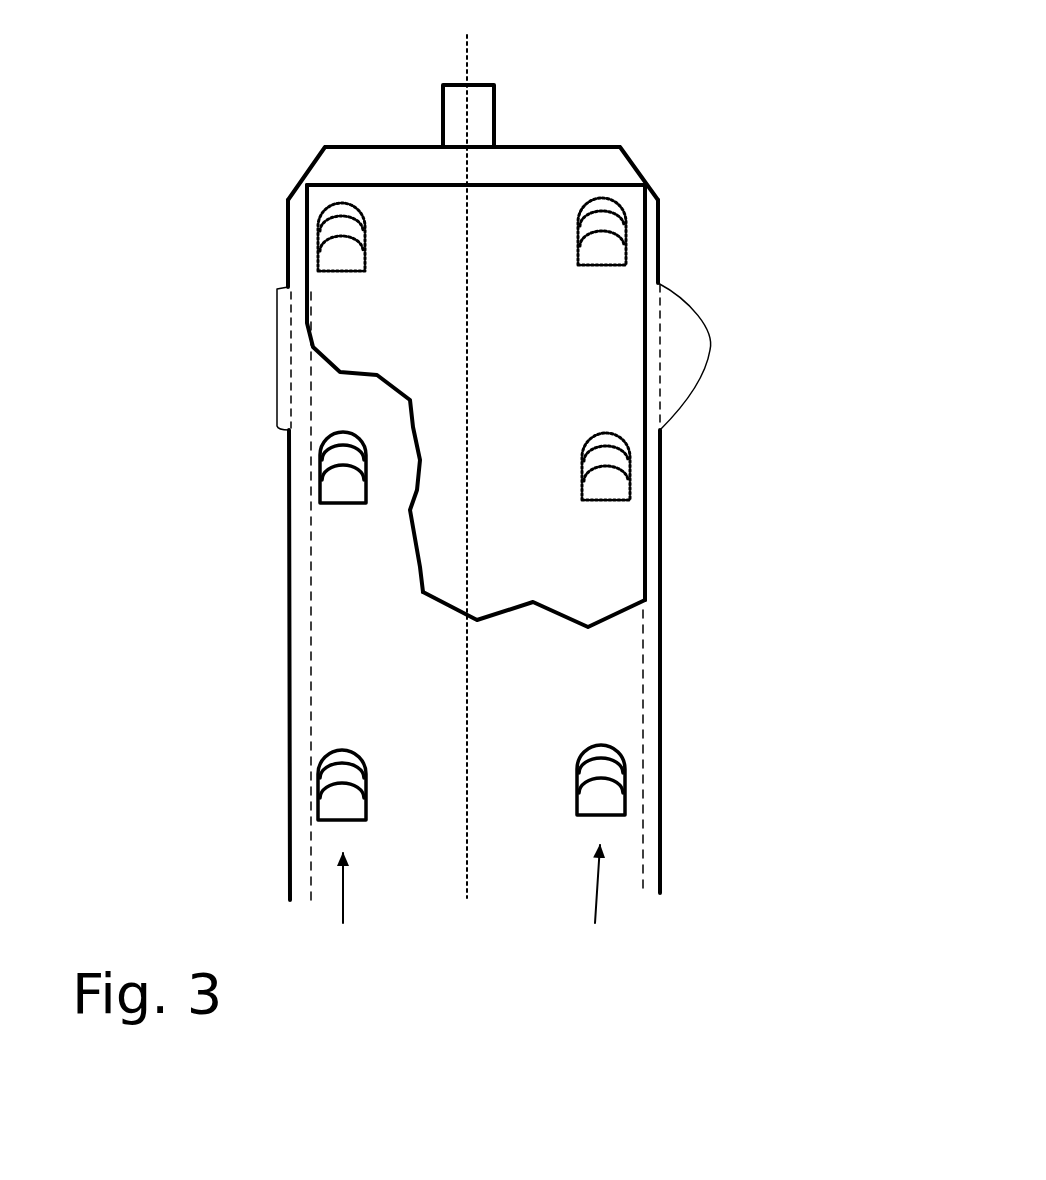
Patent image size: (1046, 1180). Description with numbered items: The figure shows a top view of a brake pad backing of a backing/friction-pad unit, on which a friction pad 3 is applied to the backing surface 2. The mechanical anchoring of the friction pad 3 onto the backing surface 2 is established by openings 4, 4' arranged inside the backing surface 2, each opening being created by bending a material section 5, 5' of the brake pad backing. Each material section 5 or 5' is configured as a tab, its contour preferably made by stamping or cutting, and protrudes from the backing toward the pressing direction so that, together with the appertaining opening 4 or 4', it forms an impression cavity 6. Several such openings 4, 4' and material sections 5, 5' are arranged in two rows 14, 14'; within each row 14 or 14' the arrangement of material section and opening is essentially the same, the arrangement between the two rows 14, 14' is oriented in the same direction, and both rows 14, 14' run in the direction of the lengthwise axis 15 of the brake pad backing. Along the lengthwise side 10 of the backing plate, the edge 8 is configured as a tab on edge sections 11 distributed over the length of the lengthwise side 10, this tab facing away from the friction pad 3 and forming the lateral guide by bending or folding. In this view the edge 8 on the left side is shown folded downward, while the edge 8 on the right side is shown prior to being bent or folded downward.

The backing surface 2 is at (578, 655).
The friction pad 3 is at (601, 315).
The opening 4 is at (260, 495).
The material section 5 is at (263, 537).
The impression cavity 6 is at (372, 238).
The opening 4' is at (692, 481).
The material section 5' is at (686, 533).
The edge 8 is at (280, 398).
The lengthwise side 10 is at (273, 603).
The edge section 11 is at (253, 353).
The row 14 is at (350, 913).
The row 14' is at (600, 911).
The lengthwise axis 15 is at (468, 58).